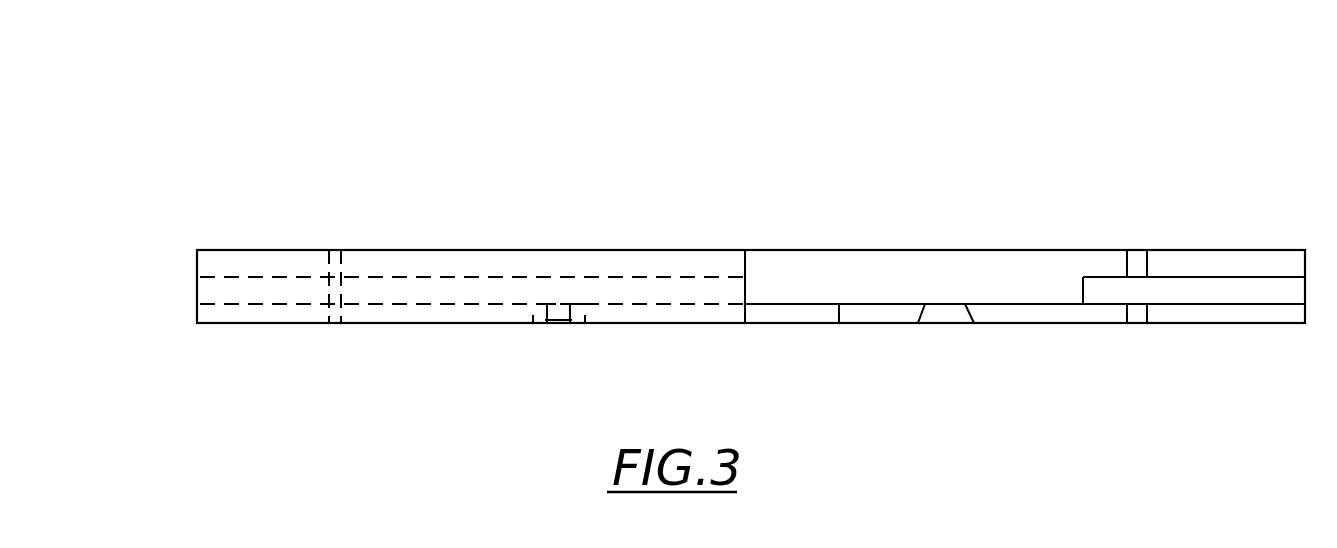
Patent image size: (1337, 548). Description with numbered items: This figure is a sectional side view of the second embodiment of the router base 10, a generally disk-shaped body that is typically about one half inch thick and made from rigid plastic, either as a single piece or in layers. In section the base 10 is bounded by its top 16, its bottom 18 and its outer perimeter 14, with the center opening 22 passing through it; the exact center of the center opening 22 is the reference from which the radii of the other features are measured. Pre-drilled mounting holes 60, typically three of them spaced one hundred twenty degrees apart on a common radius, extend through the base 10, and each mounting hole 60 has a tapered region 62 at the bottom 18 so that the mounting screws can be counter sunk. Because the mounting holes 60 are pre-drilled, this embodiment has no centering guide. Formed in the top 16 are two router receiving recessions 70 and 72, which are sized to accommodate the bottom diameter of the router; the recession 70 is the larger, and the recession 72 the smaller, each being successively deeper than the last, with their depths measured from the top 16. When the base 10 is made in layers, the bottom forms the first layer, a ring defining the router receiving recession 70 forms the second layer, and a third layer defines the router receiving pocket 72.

The router base 10 is at (721, 220).
The outer perimeter 14 is at (197, 276).
The top 16 is at (410, 250).
The bottom 18 is at (410, 323).
The center opening 22 is at (805, 317).
The mounting holes 60 is at (549, 323).
The tapered region 62 is at (573, 323).
The router receiving recession 70 is at (980, 289).
The router receiving recession 72 is at (1105, 266).